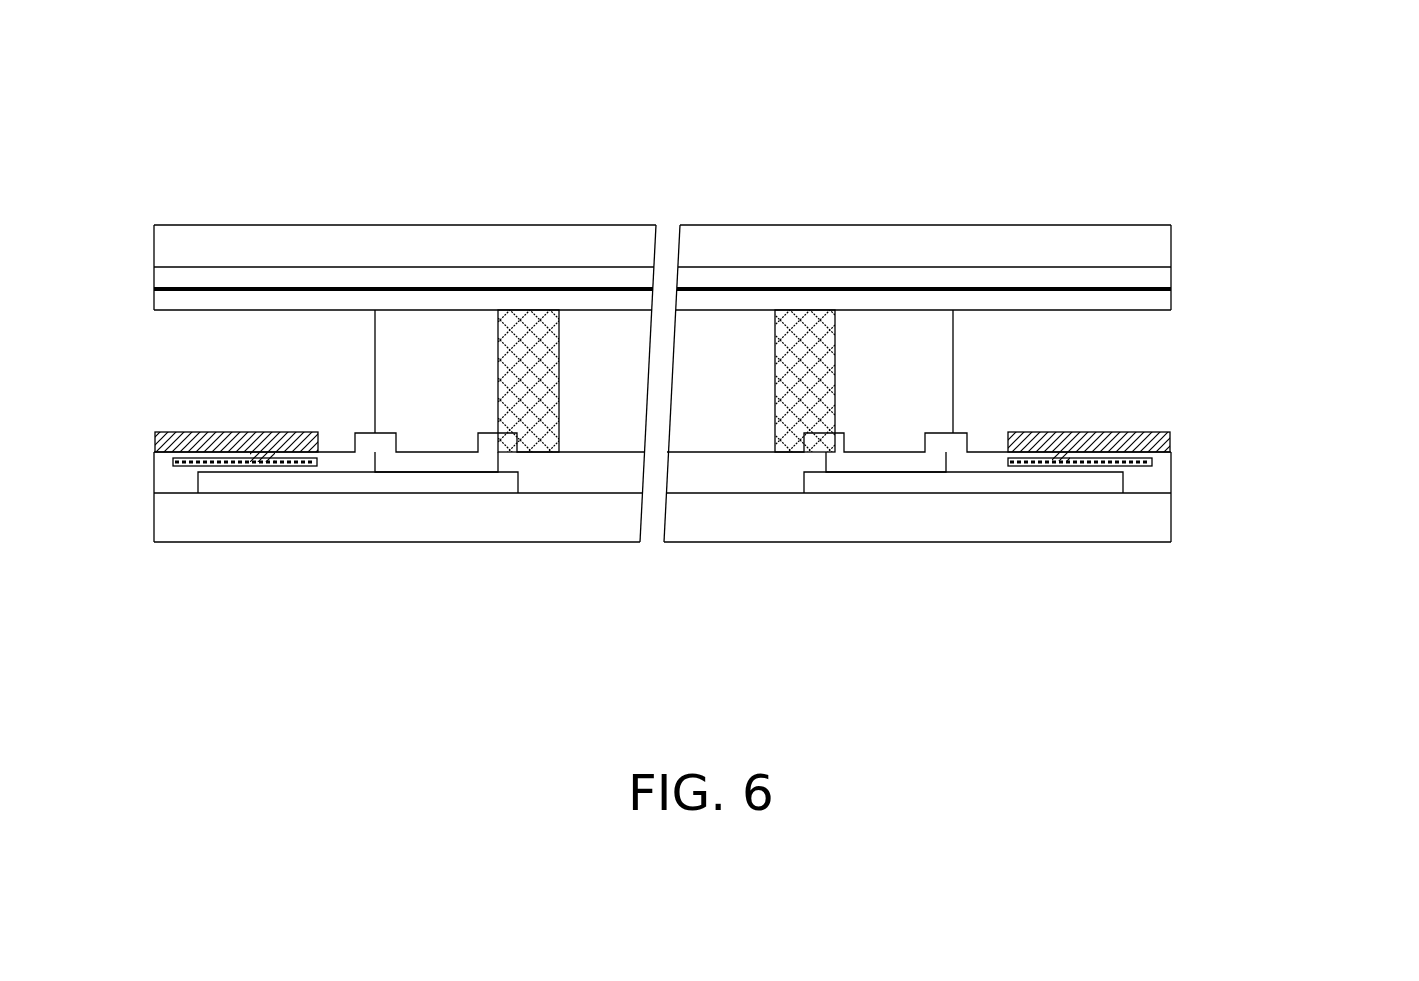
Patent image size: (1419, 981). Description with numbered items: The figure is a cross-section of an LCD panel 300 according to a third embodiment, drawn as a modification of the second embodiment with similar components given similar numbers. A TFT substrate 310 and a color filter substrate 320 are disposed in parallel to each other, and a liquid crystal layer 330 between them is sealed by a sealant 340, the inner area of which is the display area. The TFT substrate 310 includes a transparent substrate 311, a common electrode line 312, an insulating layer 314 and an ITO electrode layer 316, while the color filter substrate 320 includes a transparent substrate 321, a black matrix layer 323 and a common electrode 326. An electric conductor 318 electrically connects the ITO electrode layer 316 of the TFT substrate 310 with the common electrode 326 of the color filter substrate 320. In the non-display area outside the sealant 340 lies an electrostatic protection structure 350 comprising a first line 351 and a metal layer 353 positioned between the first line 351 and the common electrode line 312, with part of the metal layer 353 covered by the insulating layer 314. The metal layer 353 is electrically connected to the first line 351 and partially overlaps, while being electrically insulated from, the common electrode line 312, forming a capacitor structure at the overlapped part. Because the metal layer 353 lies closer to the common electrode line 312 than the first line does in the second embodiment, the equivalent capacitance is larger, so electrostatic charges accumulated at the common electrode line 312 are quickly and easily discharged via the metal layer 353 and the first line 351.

The LCD panel 300 is at (1318, 70).
The TFT substrate 310 is at (148, 455).
The transparent substrate 311 is at (1140, 530).
The common electrode line 312 is at (910, 487).
The insulating layer 314 is at (1155, 480).
The ITO electrode layer 316 is at (833, 460).
The electric conductor 318 is at (921, 375).
The color filter substrate 320 is at (148, 230).
The transparent substrate 321 is at (1128, 237).
The black matrix layer 323 is at (1149, 276).
The common electrode 326 is at (1160, 307).
The liquid crystal layer 330 is at (719, 330).
The sealant 340 is at (808, 330).
The electrostatic protection structure 350 is at (1298, 418).
The first line 351 is at (1172, 433).
The metal layer 353 is at (1158, 461).